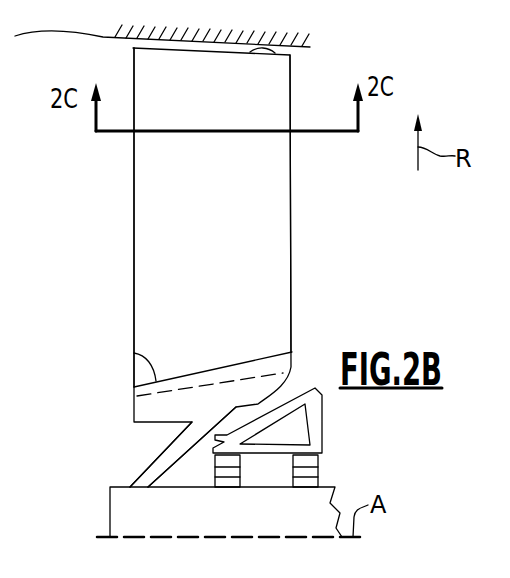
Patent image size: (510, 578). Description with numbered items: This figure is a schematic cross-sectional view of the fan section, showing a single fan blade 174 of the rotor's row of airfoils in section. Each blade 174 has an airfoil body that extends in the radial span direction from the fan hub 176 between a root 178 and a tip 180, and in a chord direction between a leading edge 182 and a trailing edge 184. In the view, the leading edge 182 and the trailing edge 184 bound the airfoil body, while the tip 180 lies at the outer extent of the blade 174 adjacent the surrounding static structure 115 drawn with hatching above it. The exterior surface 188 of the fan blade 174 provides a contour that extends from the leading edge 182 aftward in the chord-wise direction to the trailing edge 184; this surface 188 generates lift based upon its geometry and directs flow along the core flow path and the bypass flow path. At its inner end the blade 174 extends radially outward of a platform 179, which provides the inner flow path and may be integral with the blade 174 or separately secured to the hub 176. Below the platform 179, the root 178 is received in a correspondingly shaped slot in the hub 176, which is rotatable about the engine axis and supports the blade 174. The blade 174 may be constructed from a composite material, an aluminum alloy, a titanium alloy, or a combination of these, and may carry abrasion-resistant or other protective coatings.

The engine static structure / outer casing 115 is at (112, 35).
The fan blade 174 is at (312, 256).
The fan hub 176 is at (157, 472).
The root 178 is at (134, 396).
The platform 179 is at (134, 353).
The tip 180 is at (275, 53).
The leading edge 182 is at (134, 207).
The trailing edge 184 is at (293, 173).
The exterior surface 188 is at (262, 231).